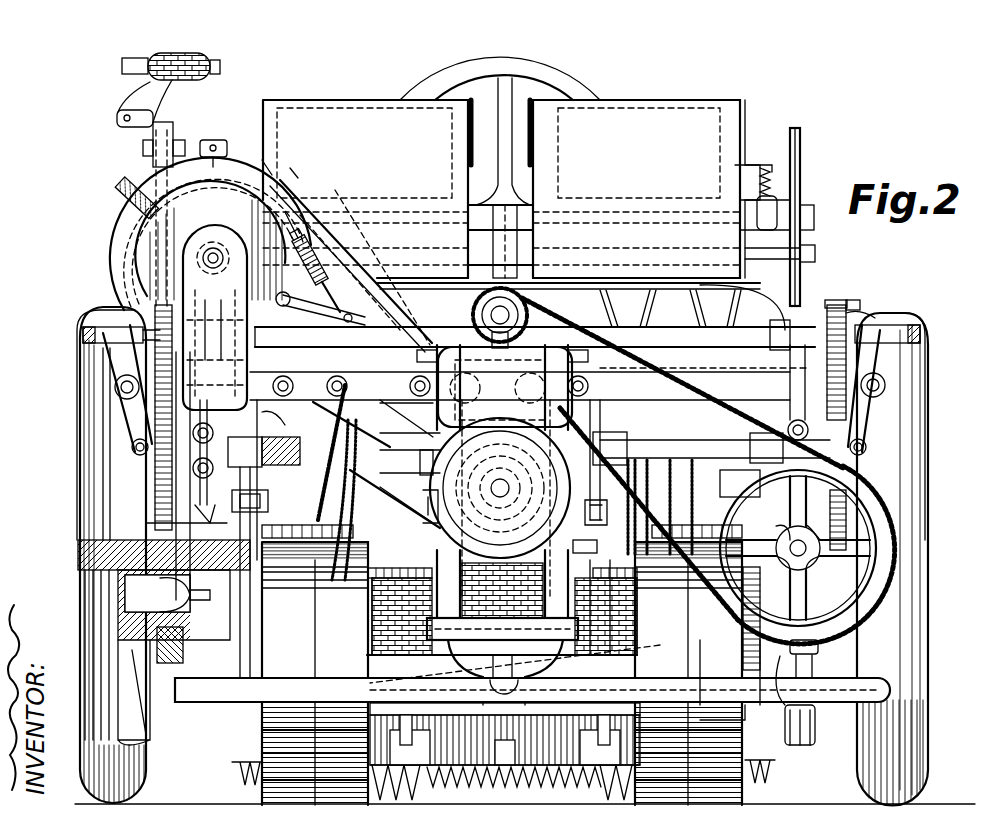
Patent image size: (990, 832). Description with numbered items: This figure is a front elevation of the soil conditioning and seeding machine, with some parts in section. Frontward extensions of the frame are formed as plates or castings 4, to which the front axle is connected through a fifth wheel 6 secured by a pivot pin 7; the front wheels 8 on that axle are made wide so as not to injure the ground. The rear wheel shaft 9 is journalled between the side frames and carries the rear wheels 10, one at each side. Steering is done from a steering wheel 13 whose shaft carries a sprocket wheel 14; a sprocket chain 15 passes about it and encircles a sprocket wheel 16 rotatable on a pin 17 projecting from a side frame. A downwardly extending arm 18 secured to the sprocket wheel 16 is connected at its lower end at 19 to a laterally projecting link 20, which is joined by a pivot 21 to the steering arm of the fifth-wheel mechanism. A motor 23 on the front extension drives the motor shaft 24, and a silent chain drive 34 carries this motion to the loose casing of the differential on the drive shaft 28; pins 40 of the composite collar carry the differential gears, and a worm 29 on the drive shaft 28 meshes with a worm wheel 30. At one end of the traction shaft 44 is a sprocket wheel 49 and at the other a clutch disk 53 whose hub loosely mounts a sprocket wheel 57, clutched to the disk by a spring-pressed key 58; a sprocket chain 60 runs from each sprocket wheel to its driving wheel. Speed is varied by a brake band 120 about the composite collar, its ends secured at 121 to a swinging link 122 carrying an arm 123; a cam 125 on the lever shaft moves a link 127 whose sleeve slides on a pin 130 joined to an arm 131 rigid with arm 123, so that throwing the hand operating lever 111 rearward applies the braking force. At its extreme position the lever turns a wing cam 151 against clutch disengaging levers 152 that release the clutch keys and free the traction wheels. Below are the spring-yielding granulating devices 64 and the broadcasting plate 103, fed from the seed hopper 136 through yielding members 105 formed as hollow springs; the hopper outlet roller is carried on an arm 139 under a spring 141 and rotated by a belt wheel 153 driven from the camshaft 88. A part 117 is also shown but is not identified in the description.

The plates or castings 4 is at (443, 566).
The fifth wheel 6 is at (530, 640).
The pivot pin 7 is at (487, 612).
The front wheels 8 is at (293, 800).
The rear wheel shaft 9 is at (163, 560).
The rear wheels 10 is at (147, 772).
The steering wheel 13 is at (432, 86).
The sprocket wheel 14 is at (488, 312).
The sprocket chain 15 is at (660, 380).
The sprocket wheel 16 is at (857, 507).
The pin 17 is at (798, 556).
The downwardly extending arm 18 is at (817, 652).
The lower-end connection 19 is at (810, 708).
The link 20 is at (707, 693).
The pivot 21 is at (521, 656).
The motor 23 is at (430, 387).
The motor shaft 24 is at (500, 487).
The drive shaft 28 is at (293, 198).
The worm 29 is at (205, 230).
The worm wheel 30 is at (110, 250).
The silent chain drive 34 is at (395, 499).
The pins 40 is at (108, 276).
The traction shaft 44 is at (691, 332).
The sprocket wheel 49 is at (140, 343).
The clutch disk 53 is at (822, 307).
The sprocket wheel 57 is at (848, 308).
The key 58 is at (867, 310).
The sprocket chain 60 is at (150, 467).
The granulating or pulverizing devices 64 is at (381, 805).
The camshaft 88 is at (814, 254).
The broadcasting plate 103 is at (505, 752).
The yielding members 105 is at (353, 552).
The hand operating lever 111 is at (168, 163).
The link bracket 117 is at (593, 463).
The brake band 120 is at (227, 250).
The securing points 121 is at (368, 283).
The swinging link 122 is at (535, 318).
The arm 123 is at (318, 283).
The cam 125 is at (223, 516).
The link 127 is at (267, 419).
The pin 130 is at (376, 437).
The arm 131 is at (530, 373).
The seed hopper 136 is at (723, 127).
The arm 139 is at (776, 203).
The spring 141 is at (762, 183).
The wing cam 151 is at (140, 432).
The clutch disengaging levers 152 is at (123, 406).
The belt wheel 153 is at (800, 153).